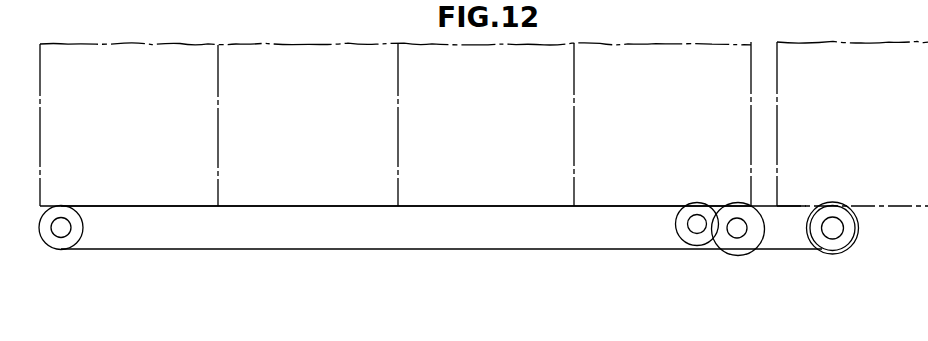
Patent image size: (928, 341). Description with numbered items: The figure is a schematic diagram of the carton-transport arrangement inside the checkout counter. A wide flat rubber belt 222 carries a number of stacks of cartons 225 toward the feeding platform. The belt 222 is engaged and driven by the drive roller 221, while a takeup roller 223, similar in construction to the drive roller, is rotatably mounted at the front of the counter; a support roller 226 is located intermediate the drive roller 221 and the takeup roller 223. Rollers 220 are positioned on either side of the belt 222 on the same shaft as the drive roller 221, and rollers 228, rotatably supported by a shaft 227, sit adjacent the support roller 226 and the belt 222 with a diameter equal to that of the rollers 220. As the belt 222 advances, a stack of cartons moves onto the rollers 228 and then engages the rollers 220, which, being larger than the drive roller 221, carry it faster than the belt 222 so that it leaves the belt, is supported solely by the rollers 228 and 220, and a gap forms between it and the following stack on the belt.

The rollers 220 is at (860, 224).
The drive roller 221 is at (838, 240).
The belt 222 is at (450, 205).
The takeup roller 223 is at (81, 226).
The stacks of cartons 225 is at (155, 44).
The support roller 226 is at (676, 223).
The shaft 227 is at (745, 230).
The rollers 228 is at (757, 218).